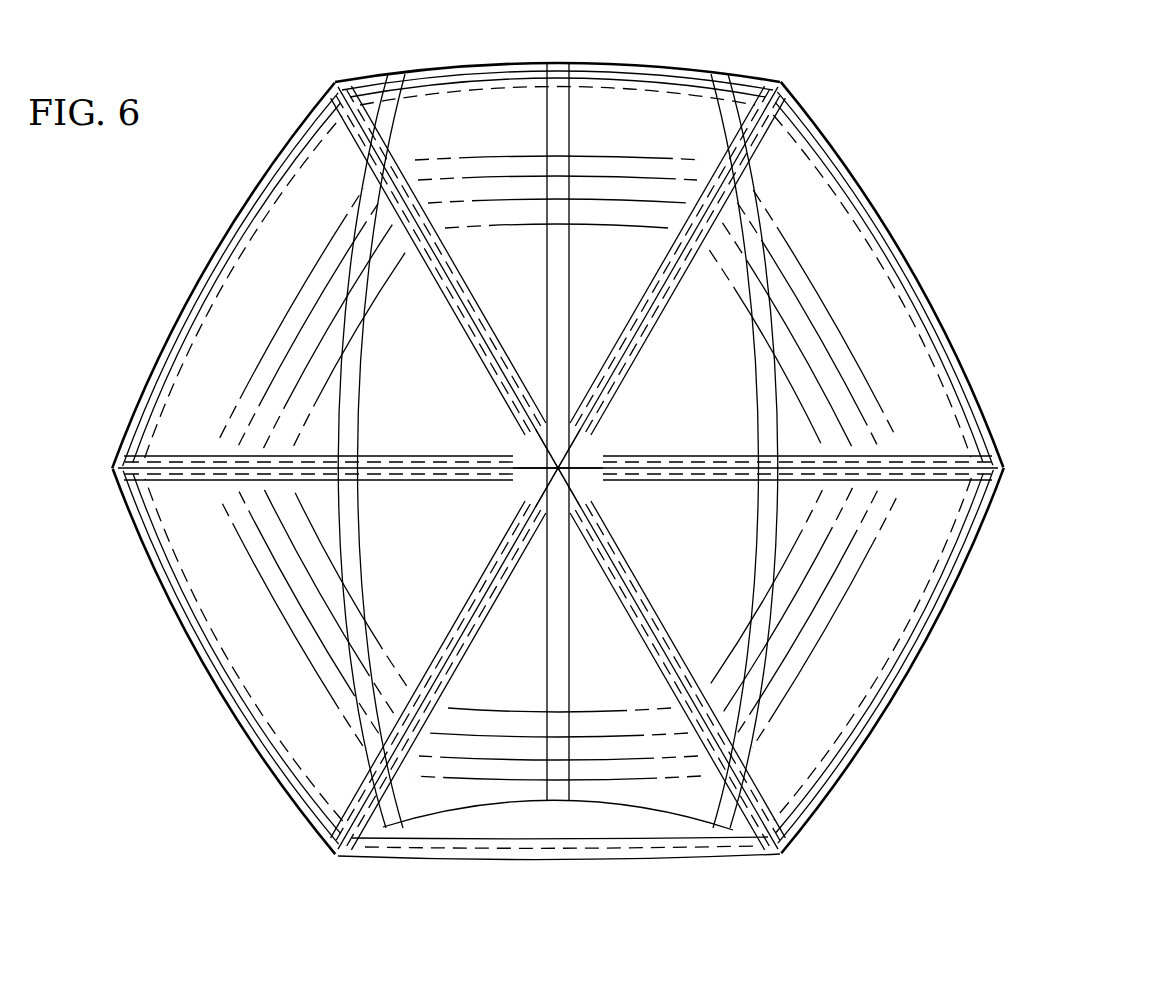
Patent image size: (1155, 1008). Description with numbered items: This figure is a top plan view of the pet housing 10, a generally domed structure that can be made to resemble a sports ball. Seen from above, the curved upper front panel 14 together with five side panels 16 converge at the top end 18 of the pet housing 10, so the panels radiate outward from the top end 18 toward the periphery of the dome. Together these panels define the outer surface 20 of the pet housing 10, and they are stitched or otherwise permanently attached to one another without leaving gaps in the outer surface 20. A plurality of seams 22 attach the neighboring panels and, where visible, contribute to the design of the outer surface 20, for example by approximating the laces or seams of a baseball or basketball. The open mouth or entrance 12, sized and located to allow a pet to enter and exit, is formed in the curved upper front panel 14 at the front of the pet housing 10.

The pet housing 10 is at (1019, 127).
The open mouth (entrance) 12 is at (602, 868).
The curved upper front panel 14 is at (515, 735).
The side panel 16 is at (630, 107).
The top end 18 is at (611, 446).
The outer surface 20 is at (455, 97).
The seam 22 is at (340, 104).